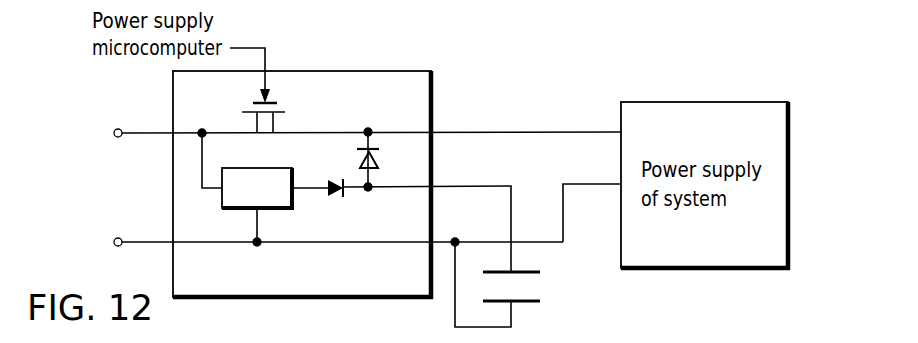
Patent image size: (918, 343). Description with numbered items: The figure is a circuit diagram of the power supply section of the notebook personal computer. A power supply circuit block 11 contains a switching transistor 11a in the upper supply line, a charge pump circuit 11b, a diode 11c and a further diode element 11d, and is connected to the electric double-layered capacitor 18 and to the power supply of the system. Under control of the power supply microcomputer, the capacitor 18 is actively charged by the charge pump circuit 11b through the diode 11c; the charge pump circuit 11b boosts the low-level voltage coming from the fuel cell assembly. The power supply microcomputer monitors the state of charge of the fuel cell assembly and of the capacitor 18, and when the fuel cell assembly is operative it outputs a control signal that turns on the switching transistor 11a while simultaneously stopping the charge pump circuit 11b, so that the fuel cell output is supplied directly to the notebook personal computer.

The power supply circuit 11 is at (432, 80).
The switching transistor 11a is at (288, 104).
The charge pump circuit 11b is at (290, 211).
The diode 11c is at (348, 196).
The zener diode 11d is at (360, 157).
The electric double-layered capacitor 18 is at (544, 289).